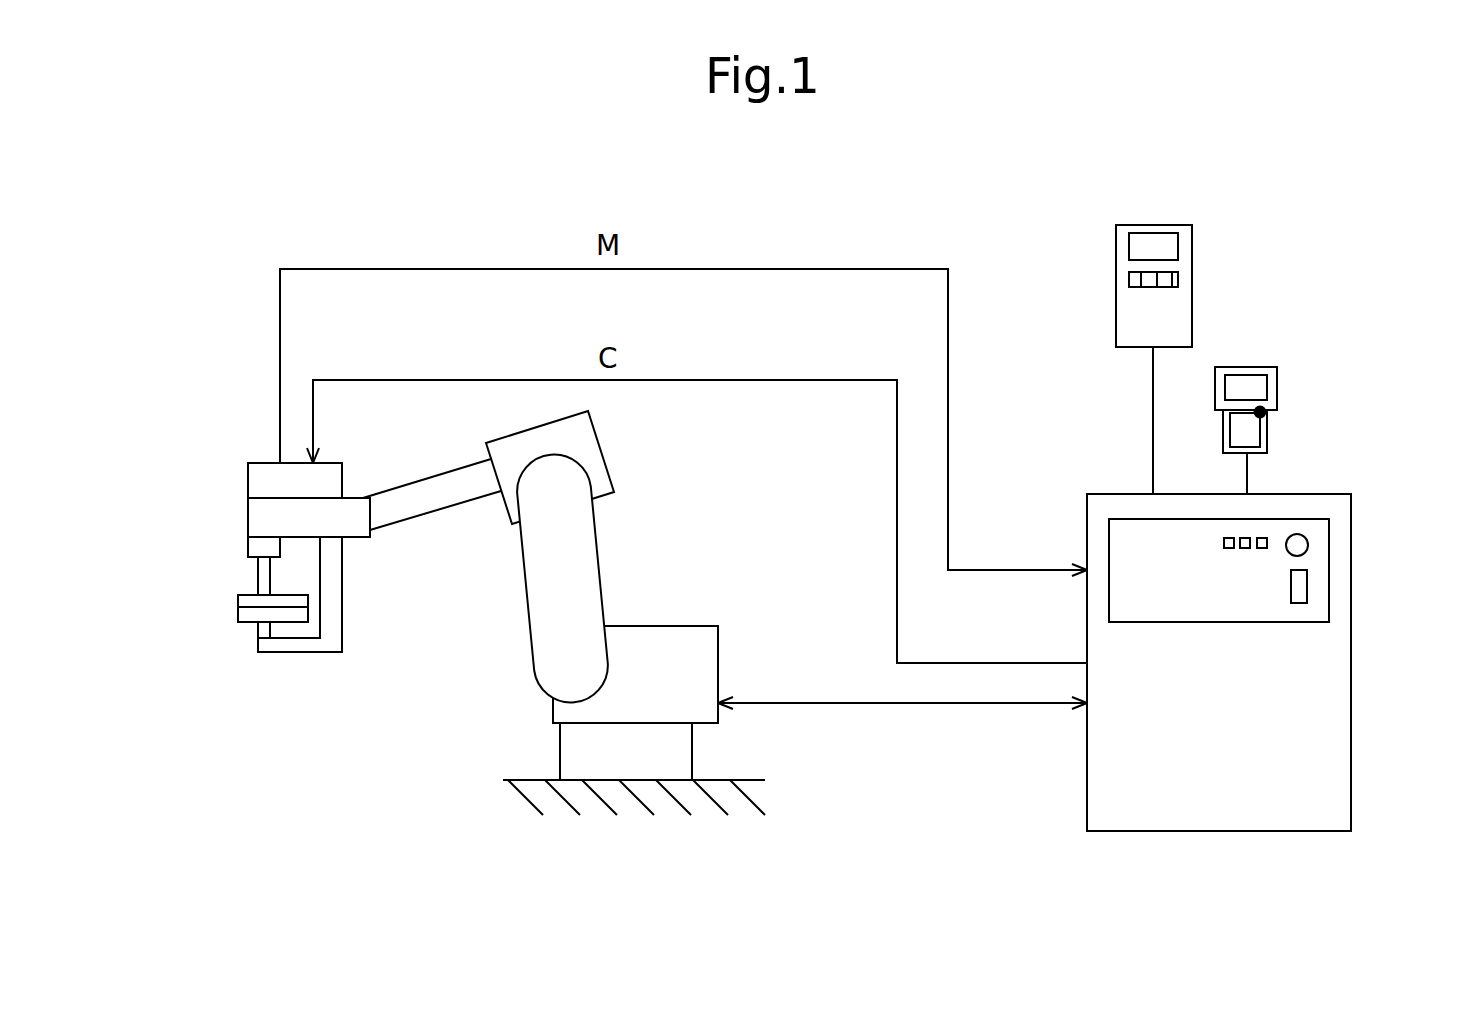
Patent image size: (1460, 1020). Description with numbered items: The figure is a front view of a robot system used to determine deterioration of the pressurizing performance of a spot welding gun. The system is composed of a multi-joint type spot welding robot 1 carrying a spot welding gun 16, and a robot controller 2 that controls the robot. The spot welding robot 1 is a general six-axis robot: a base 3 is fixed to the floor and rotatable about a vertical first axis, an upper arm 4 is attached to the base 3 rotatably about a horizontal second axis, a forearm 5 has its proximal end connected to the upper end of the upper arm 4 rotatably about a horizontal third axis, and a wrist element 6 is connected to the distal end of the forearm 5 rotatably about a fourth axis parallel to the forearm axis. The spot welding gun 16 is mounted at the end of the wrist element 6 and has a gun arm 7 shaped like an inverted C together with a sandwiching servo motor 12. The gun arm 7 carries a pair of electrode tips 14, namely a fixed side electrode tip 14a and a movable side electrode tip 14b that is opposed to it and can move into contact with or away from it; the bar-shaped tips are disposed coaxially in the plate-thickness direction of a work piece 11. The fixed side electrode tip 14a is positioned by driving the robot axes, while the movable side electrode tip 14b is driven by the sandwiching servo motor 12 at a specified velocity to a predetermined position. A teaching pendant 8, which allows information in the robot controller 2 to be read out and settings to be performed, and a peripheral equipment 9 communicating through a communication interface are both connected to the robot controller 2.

The spot welding robot 1 is at (708, 570).
The robot controller 2 is at (1368, 603).
The base 3 is at (705, 663).
The upper arm 4 is at (583, 553).
The forearm 5 is at (595, 447).
The wrist element 6 is at (430, 482).
The gun arm 7 is at (333, 603).
The teaching pendant 8 is at (1215, 383).
The peripheral equipment 9 is at (1187, 274).
The work piece 11 is at (288, 600).
The sandwiching servo motor 12 is at (258, 480).
The pair of electrode tips 14 is at (201, 621).
The fixed side electrode tip 14a is at (257, 630).
The movable side electrode tip 14b is at (262, 578).
The spot welding gun 16 is at (225, 521).